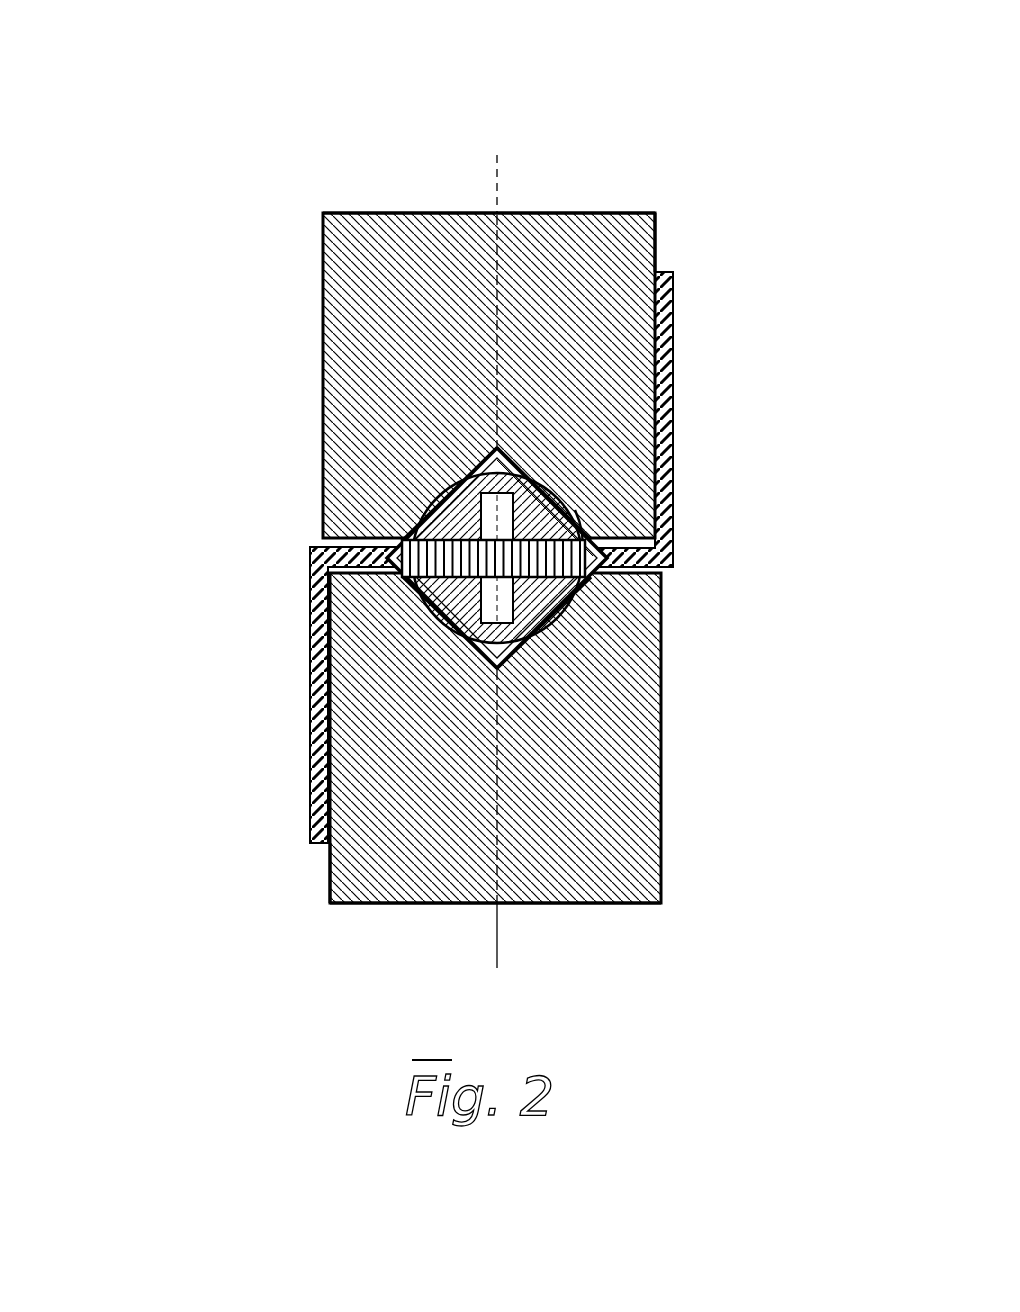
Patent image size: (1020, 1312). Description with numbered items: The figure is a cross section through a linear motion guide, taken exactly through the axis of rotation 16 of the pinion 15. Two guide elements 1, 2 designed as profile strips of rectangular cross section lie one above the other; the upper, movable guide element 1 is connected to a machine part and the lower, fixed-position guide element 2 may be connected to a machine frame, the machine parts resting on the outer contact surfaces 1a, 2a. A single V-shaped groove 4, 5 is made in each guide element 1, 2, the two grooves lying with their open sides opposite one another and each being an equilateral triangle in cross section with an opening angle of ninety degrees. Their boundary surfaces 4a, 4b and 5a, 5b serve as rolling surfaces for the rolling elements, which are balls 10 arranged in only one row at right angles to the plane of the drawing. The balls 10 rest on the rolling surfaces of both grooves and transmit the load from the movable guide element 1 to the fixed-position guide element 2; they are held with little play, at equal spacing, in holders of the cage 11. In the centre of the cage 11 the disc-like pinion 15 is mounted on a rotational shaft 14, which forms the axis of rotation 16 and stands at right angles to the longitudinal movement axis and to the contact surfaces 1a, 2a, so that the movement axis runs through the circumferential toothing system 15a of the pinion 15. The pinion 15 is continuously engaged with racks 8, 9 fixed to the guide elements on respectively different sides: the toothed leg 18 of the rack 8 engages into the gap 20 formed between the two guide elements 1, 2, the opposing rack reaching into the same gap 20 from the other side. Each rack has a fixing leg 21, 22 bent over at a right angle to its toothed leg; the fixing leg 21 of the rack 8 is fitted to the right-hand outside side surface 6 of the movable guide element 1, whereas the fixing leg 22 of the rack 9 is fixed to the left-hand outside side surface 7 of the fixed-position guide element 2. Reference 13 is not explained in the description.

The guide element 1 is at (607, 198).
The outer contact surface 1a is at (367, 210).
The guide element 2 is at (678, 863).
The outer contact surface 2a is at (610, 905).
The V-shaped groove 4 is at (600, 478).
The boundary surface 4a is at (490, 440).
The boundary surface 4b is at (520, 450).
The V-shaped groove 5 is at (578, 610).
The boundary surface 5a is at (480, 680).
The boundary surface 5b is at (528, 690).
The outside side surface 6 is at (655, 218).
The outside side surface 7 is at (327, 865).
The rack 8 is at (680, 330).
The rack 9 is at (295, 758).
The balls 10 is at (403, 590).
The cage 11 is at (417, 485).
The gap 13 is at (317, 538).
The rotational shaft 14 is at (565, 485).
The pinion 15 is at (592, 520).
The toothing system 15a is at (672, 528).
The axis of rotation 16 is at (505, 920).
The toothed leg 18 is at (665, 578).
The gap 20 is at (662, 593).
The fixing leg 21 is at (675, 352).
The fixing leg 22 is at (310, 677).